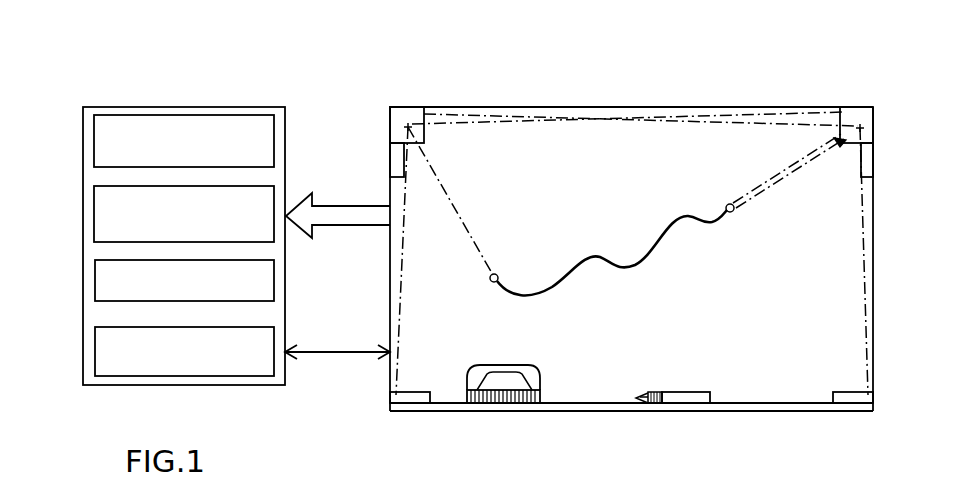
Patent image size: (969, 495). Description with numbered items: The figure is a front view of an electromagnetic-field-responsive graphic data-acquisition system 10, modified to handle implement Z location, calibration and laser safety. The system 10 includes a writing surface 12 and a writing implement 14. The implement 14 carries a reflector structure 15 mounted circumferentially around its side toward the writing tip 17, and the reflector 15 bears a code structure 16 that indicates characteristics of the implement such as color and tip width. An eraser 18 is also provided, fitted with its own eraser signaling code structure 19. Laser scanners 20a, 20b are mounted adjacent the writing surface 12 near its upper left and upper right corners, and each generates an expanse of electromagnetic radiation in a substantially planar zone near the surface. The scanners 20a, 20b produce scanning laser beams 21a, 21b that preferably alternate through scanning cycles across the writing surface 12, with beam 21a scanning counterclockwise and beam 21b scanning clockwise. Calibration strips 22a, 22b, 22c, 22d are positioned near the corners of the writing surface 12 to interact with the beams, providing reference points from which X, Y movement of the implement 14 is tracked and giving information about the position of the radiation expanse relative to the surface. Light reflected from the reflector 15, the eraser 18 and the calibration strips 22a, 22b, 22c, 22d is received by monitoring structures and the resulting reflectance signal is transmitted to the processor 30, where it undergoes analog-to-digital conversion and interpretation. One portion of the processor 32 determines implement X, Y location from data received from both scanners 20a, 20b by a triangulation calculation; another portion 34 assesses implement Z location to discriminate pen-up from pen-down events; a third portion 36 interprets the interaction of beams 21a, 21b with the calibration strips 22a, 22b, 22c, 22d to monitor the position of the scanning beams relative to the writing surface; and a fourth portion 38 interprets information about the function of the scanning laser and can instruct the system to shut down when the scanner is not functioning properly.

The graphic data-acquisition system 10 is at (392, 66).
The writing surface 12 is at (843, 281).
The writing implement 14 is at (491, 281).
The reflector structure 15 is at (656, 393).
The code structure 16 is at (656, 405).
The writing tip 17 is at (641, 398).
The eraser 18 is at (469, 384).
The eraser signaling code structure 19 is at (503, 398).
The laser scanner 20a is at (413, 119).
The laser scanner 20b is at (853, 118).
The scanning laser beam 21a is at (456, 212).
The scanning laser beam 21b is at (802, 161).
The calibration strip 22a is at (866, 166).
The calibration strip 22b is at (857, 398).
The calibration strip 22c is at (405, 398).
The calibration strip 22d is at (403, 162).
The processor 30 is at (83, 244).
The implement X, Y location processing portion 32 is at (94, 143).
The implement Z location processing portion 34 is at (94, 226).
The calibration processing portion 36 is at (95, 291).
The laser safety processing portion 38 is at (243, 376).